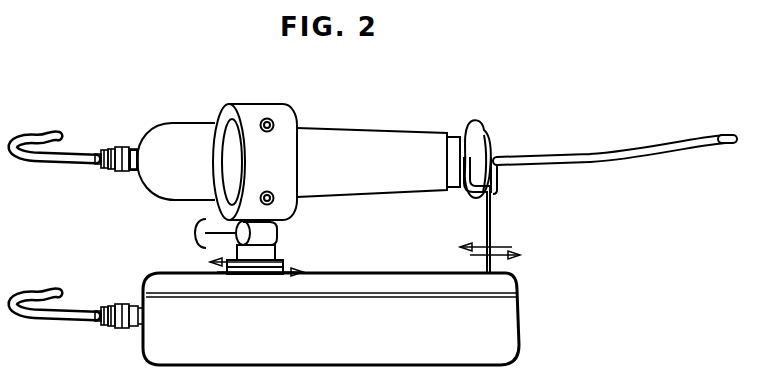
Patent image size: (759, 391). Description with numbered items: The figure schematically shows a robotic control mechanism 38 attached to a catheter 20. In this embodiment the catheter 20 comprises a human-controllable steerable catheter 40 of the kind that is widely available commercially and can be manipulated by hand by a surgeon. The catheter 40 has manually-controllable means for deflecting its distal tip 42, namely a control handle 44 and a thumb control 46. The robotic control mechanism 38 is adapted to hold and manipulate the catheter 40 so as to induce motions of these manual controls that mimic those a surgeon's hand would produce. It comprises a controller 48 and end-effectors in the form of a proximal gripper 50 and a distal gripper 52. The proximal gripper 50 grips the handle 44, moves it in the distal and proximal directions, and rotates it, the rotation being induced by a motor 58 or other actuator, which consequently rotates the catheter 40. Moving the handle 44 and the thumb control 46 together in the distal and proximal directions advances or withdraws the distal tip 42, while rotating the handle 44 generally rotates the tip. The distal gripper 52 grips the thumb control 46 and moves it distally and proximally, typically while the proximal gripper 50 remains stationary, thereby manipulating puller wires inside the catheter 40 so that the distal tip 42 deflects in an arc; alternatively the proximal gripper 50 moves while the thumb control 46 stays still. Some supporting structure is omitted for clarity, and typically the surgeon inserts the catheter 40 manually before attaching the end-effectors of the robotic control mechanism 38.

The catheter 20 is at (213, 99).
The robotic control mechanism 38 is at (170, 228).
The human-controllable steerable catheter 40 is at (576, 152).
The distal tip 42 is at (733, 134).
The control handle 44 is at (370, 128).
The thumb control 46 is at (480, 130).
The controller 48 is at (500, 316).
The proximal gripper 50 is at (258, 108).
The distal gripper 52 is at (490, 218).
The motor 58 is at (276, 233).